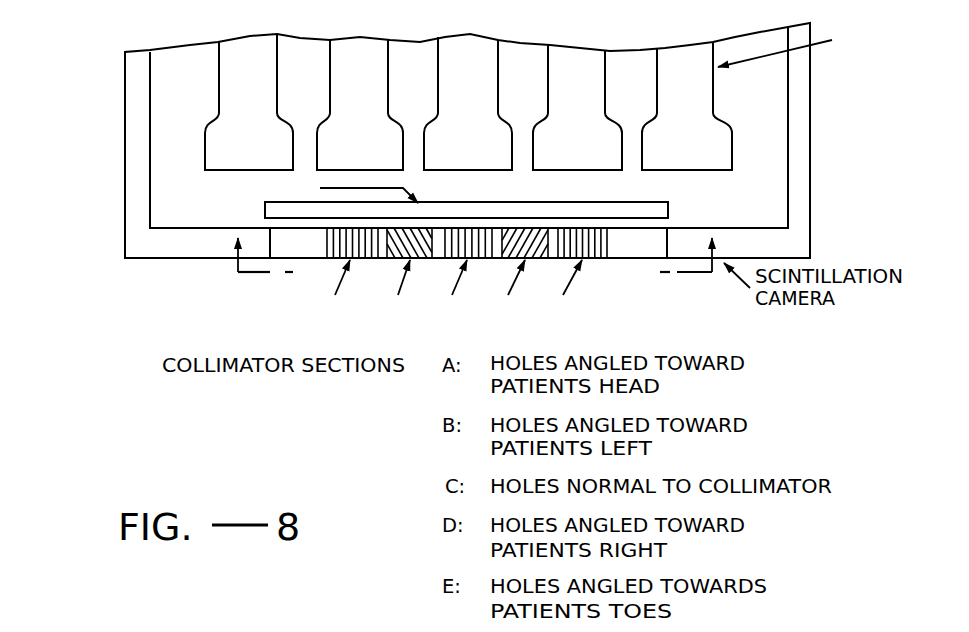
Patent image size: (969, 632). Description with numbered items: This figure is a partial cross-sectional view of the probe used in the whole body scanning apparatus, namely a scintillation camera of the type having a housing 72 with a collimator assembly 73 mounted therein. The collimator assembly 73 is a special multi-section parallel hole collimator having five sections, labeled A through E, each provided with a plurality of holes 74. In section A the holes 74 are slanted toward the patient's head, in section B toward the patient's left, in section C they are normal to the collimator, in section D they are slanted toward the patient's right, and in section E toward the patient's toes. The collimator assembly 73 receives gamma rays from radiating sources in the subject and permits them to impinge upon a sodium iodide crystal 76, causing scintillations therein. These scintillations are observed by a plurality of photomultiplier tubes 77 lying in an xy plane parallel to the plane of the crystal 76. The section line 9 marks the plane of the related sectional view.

The housing 72 is at (803, 130).
The photomultiplier tubes 77 is at (713, 81).
The sodium iodide crystal 76 is at (668, 207).
The collimator assembly 73 is at (338, 276).
The holes 74 is at (360, 258).
The section line 9- 9 is at (476, 267).